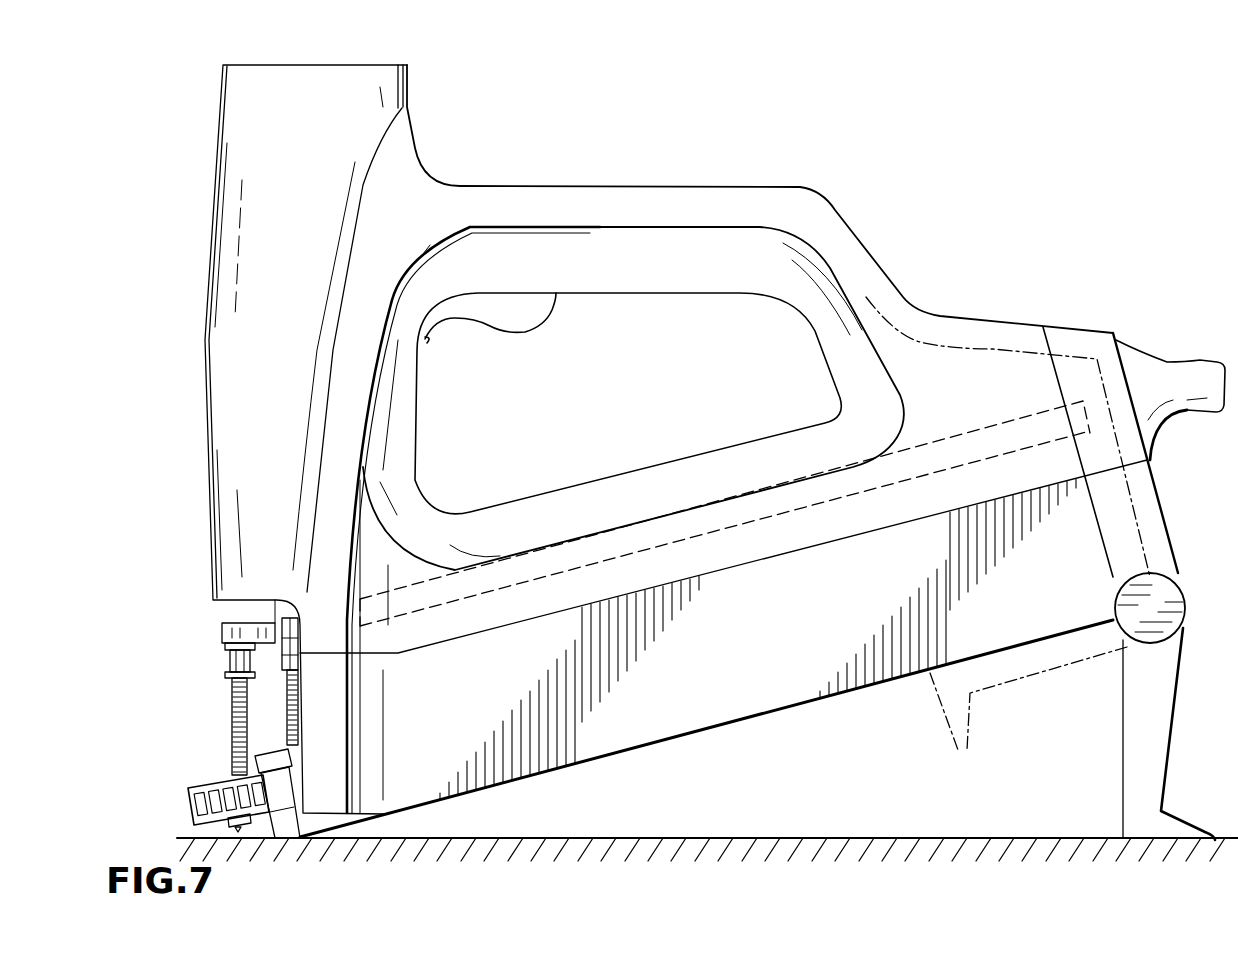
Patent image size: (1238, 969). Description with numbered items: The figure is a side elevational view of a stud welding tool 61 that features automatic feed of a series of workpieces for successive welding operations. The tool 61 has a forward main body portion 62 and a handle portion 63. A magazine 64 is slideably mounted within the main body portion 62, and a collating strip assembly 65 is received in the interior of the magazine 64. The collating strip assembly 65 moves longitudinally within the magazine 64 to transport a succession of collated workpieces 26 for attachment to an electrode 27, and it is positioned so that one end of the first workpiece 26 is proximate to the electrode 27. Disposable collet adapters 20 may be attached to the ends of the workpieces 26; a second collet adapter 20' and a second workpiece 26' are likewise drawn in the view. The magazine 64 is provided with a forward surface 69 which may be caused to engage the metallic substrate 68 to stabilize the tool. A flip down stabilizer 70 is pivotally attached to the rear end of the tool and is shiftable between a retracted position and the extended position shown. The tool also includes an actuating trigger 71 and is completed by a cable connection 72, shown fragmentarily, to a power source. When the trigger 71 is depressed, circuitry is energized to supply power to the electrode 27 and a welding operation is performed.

The stud welding tool 61 is at (933, 126).
The forward main body portion 62 is at (314, 104).
The handle portion 63 is at (538, 187).
The magazine 64 is at (730, 703).
The collating strip assembly 65 is at (190, 792).
The metallic substrate 68 is at (636, 838).
The forward surface 69 is at (288, 840).
The flip down stabilizer 70 is at (1167, 707).
The actuating trigger 71 is at (519, 325).
The cable connection 72 is at (1184, 370).
The disposable collet adapter 20 is at (213, 665).
The fastener 20' is at (309, 624).
The workpiece 26 is at (213, 726).
The threaded shaft 26' is at (312, 707).
The electrode 27 is at (253, 622).